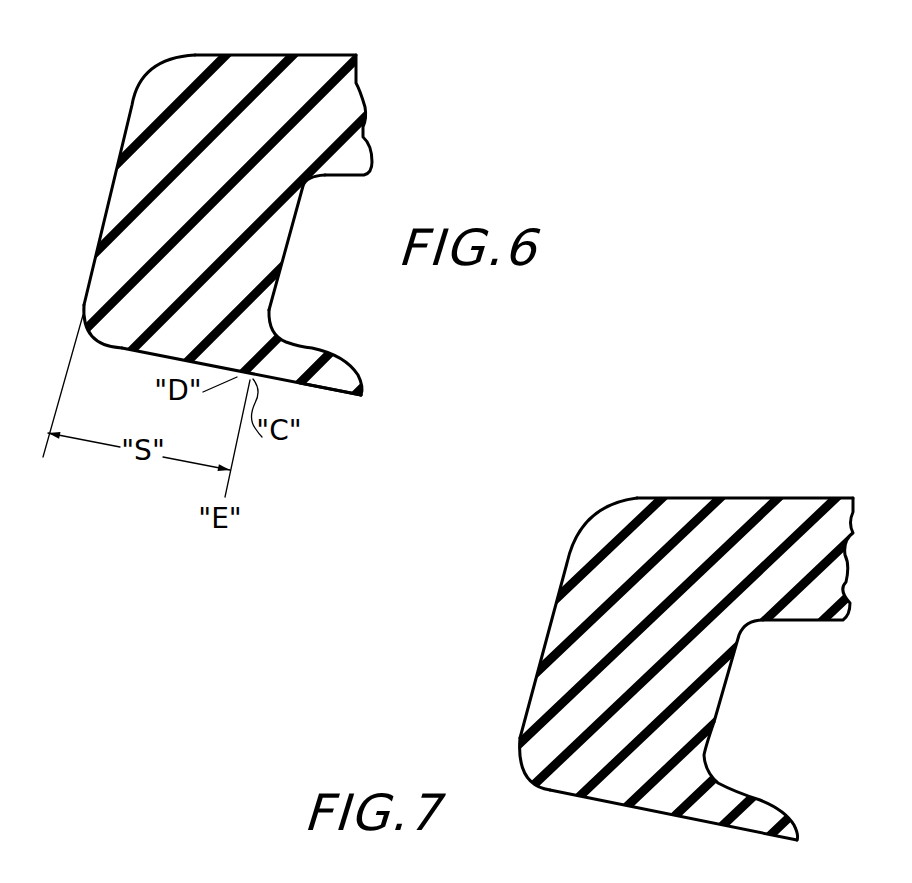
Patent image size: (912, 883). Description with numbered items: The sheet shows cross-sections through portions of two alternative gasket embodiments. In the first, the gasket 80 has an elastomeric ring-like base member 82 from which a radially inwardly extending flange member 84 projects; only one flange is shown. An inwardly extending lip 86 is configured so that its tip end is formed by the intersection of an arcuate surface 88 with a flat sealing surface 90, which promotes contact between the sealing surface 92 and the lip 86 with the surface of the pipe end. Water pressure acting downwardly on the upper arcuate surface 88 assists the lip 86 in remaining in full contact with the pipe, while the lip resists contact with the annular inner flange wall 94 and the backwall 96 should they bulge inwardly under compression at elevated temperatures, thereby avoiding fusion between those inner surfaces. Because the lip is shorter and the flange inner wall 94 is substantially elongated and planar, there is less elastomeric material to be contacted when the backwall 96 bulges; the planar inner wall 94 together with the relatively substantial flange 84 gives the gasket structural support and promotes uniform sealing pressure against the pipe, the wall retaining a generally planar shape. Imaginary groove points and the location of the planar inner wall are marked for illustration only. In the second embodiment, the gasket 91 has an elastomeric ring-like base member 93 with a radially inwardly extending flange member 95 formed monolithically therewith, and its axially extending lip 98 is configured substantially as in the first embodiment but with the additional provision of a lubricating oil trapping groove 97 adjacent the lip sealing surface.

In FIG. 6, the alternative embodiment of the gasket 80 is at (323, 53).
In FIG. 6, the elastomeric ring-like base member 82 is at (279, 55).
In FIG. 6, the radially inwardly extending flange member 84 is at (108, 195).
In FIG. 6, the inwardly extending lip 86 is at (313, 392).
In FIG. 6, the arcuate surface 88 is at (362, 378).
In FIG. 6, the flat sealing surface 90 is at (336, 397).
In FIG. 6, the sealing surface 92 is at (100, 357).
In FIG. 6, the annular inner flange wall 94 is at (284, 240).
In FIG. 7, the annular inner flange wall 94 is at (718, 680).
In FIG. 6, the backwall 96 is at (352, 178).
In FIG. 7, the backwall 96 is at (817, 620).
In FIG. 7, the alternative embodiment of the gasket 91 is at (726, 456).
In FIG. 7, the elastomeric ring-like base member 93 is at (802, 508).
In FIG. 7, the radially inwardly extending flange member 95 is at (563, 623).
In FIG. 7, the lubricating oil trapping groove 97 is at (690, 815).
In FIG. 7, the axially extending lip 98 is at (773, 818).